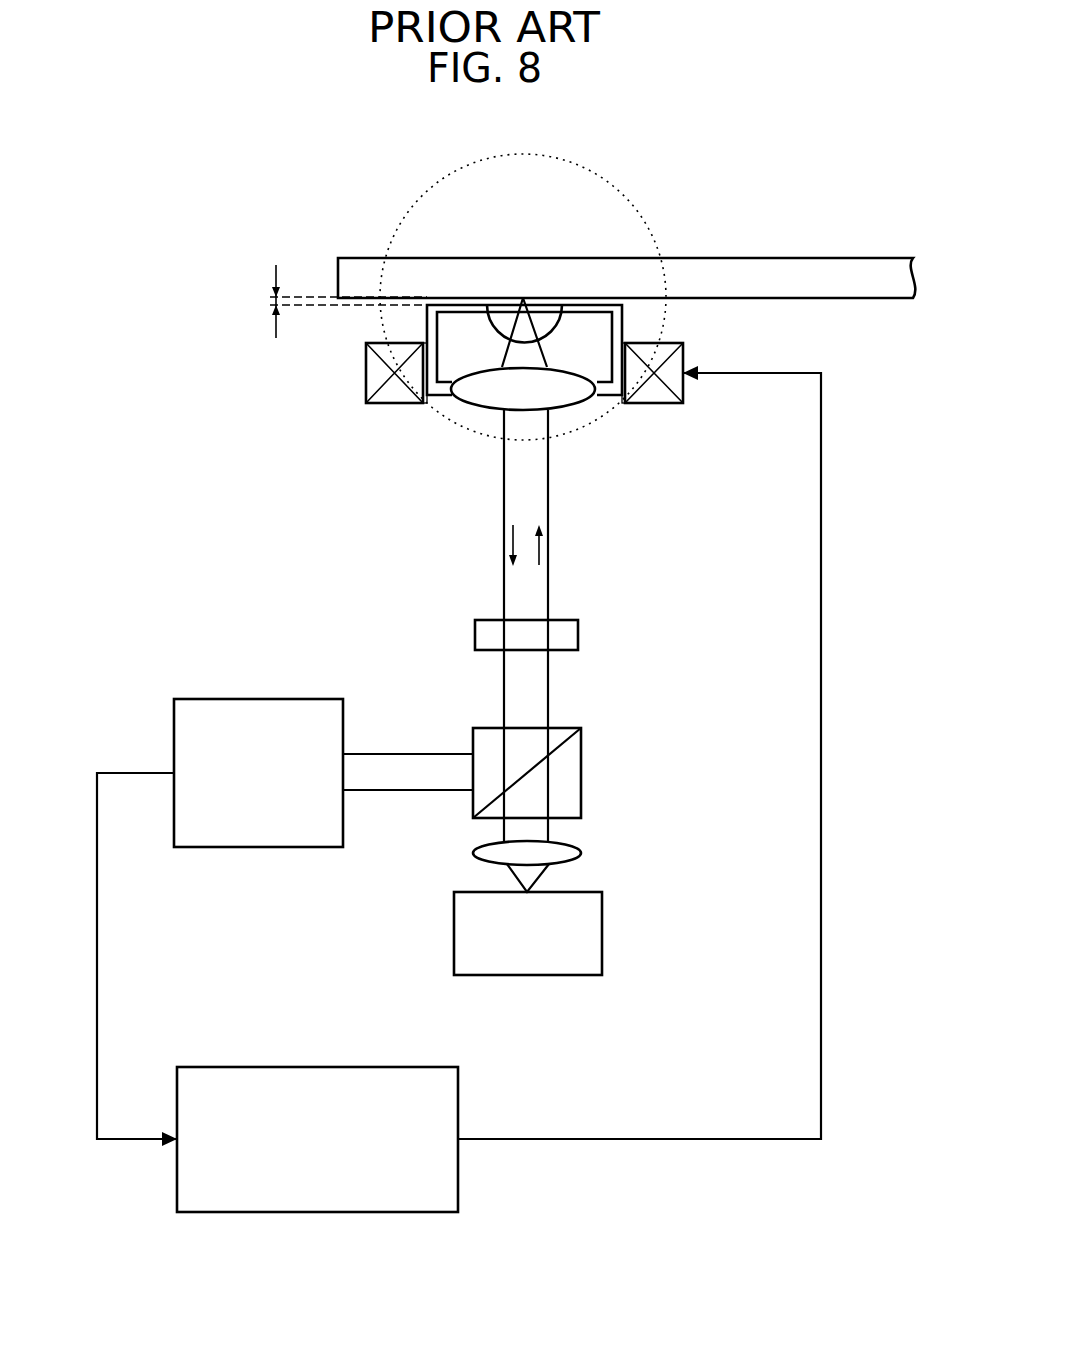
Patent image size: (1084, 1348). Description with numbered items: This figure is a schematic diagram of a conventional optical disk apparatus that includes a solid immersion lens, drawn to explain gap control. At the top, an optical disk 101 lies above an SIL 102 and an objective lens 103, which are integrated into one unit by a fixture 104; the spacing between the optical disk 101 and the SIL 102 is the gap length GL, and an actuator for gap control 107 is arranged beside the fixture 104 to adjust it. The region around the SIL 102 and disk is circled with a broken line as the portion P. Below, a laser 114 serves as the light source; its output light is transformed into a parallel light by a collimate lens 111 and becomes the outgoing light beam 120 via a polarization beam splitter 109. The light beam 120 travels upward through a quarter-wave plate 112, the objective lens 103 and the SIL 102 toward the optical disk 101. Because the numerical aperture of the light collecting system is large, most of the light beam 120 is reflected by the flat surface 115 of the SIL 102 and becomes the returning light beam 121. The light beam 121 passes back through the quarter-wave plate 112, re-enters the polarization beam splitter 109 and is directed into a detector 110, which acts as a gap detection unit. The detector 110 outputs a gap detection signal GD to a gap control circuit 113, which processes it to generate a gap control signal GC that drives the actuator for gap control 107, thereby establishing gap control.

The optical disk 101 is at (713, 258).
The SIL 102 is at (502, 313).
The objective lens 103 is at (580, 410).
The fixture 104 is at (427, 313).
The actuator for gap control 107 is at (395, 403).
The polarization beam splitter 109 is at (580, 728).
The detector 110 is at (292, 699).
The collimate lens 111 is at (580, 846).
The λ/4 plate 112 is at (578, 632).
The gap control circuit 113 is at (293, 1067).
The laser 114 is at (603, 915).
The flat surface 115 is at (543, 313).
The light beam (outgoing) 120 is at (548, 548).
The light beam (returning) 121 is at (508, 542).
The portion P is at (560, 157).
The gap length GL is at (270, 297).
The gap control signal GC is at (821, 657).
The gap detection signal GD is at (97, 947).